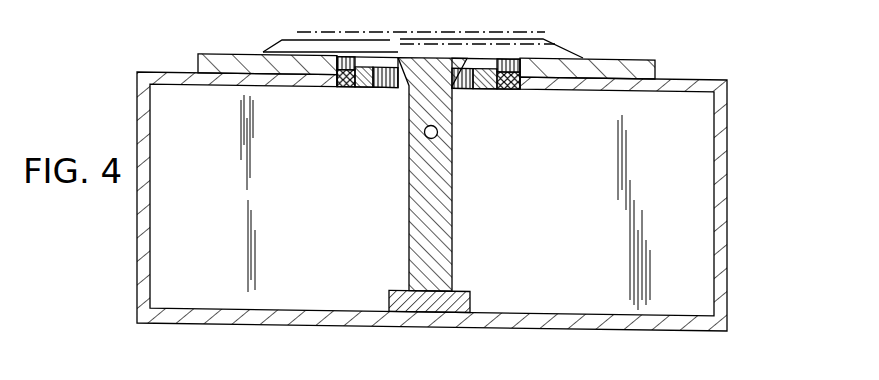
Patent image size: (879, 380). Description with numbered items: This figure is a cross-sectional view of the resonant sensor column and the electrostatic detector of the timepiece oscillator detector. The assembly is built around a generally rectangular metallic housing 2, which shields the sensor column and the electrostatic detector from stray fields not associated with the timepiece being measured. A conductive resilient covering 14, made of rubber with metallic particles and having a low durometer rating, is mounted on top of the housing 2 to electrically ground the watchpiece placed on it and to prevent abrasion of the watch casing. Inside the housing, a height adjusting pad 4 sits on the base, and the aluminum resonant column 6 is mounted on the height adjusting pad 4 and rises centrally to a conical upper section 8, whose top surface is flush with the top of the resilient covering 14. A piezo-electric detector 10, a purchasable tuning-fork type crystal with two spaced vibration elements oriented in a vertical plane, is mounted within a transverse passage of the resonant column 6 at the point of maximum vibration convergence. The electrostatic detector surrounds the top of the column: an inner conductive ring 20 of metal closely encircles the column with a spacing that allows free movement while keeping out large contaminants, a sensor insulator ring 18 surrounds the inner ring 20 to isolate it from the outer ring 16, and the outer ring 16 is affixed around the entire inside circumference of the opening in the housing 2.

The housing 2 is at (730, 127).
The height adjusting pad 4 is at (472, 298).
The resonant column 6 is at (453, 255).
The conical upper section 8 is at (393, 54).
The piezo-electric detector 10 is at (425, 134).
The conductive resilient covering 14 is at (203, 55).
The outer ring 16 is at (344, 87).
The sensor insulator ring 18 is at (364, 87).
The inner conductive ring 20 is at (375, 87).